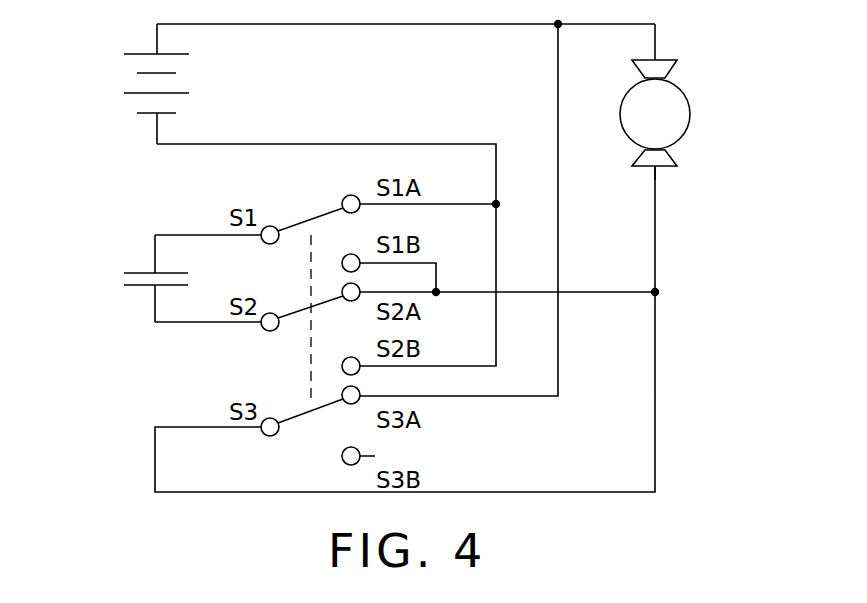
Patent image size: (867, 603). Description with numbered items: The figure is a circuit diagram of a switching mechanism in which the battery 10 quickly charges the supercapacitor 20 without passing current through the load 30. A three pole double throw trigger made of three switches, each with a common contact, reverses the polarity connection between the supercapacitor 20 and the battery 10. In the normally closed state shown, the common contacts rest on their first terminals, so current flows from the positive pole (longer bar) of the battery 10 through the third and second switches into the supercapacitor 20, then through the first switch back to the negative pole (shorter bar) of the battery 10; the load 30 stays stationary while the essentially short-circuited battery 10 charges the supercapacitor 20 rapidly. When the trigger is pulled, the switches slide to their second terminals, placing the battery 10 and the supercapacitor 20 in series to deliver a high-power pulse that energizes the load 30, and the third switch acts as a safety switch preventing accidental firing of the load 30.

The battery 10 is at (118, 62).
The supercapacitor 20 is at (130, 260).
The load 30 is at (672, 117).